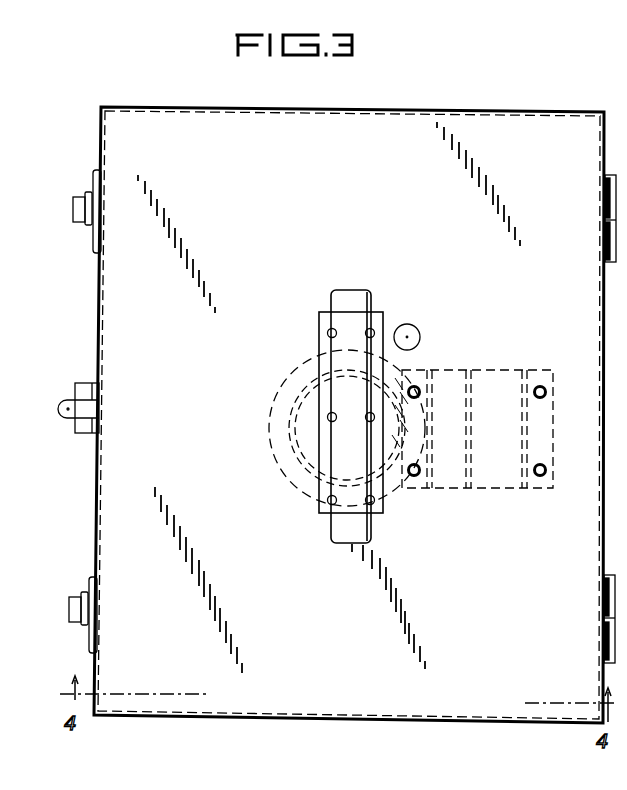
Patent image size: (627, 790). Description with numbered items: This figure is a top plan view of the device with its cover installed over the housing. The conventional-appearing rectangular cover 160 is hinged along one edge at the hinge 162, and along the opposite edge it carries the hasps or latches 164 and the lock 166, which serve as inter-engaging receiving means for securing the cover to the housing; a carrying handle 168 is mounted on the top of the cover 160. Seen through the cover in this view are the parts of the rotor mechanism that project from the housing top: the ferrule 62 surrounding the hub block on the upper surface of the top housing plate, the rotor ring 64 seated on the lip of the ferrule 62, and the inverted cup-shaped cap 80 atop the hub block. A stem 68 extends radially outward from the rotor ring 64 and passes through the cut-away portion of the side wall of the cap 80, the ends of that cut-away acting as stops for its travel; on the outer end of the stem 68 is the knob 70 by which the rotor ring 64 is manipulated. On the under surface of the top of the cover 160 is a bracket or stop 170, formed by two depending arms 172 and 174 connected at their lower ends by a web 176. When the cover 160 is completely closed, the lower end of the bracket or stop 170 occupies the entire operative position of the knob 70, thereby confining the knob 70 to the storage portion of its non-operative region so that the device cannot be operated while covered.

The cover 160 is at (259, 197).
The hinge 162 is at (606, 232).
The hasps or latches 164 is at (78, 222).
The lock 166 is at (75, 425).
The carrying handle 168 is at (331, 297).
The knob 70 is at (415, 327).
The stem 68 is at (390, 360).
The rotor ring 64 is at (290, 379).
The ferrule 62 is at (284, 456).
The cap 80 is at (295, 427).
The web 176 is at (472, 439).
The depending arm 174 is at (527, 369).
The depending arm 172 is at (435, 492).
The bracket or stop 170 is at (498, 488).